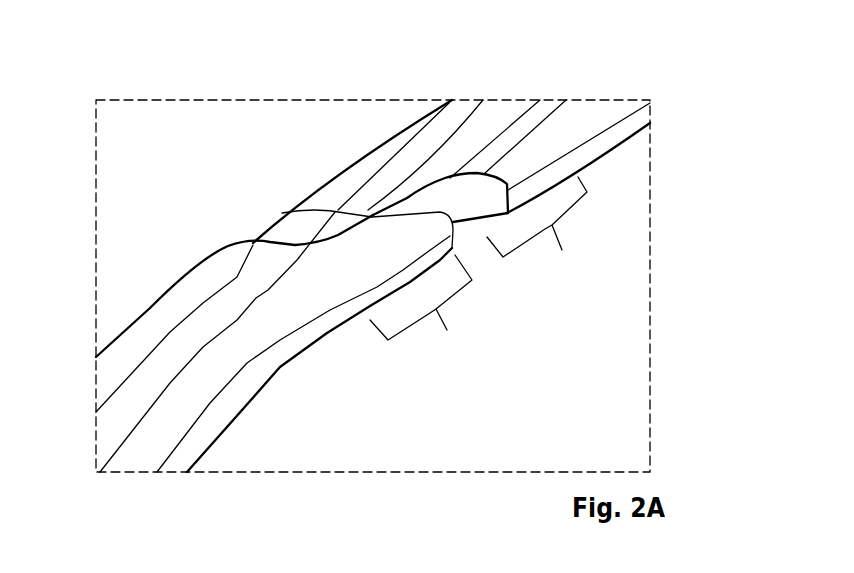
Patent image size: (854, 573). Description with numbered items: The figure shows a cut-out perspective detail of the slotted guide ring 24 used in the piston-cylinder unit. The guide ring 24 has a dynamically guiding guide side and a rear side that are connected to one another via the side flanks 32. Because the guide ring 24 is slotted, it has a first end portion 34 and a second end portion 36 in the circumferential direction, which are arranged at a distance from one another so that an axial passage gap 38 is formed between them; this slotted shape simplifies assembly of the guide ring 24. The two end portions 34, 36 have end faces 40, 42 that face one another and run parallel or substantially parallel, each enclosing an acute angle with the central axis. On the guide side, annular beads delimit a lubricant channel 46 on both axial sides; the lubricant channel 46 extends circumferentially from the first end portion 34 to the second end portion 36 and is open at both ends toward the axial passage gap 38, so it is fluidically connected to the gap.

The guide ring 24 is at (683, 84).
The side flanks 32 is at (613, 140).
The first end portion 34 is at (537, 230).
The second end portion 36 is at (421, 307).
The axial passage gap 38 is at (246, 230).
The end face 40 is at (465, 200).
The end face 42 is at (362, 209).
The lubricant channel 46 is at (419, 171).